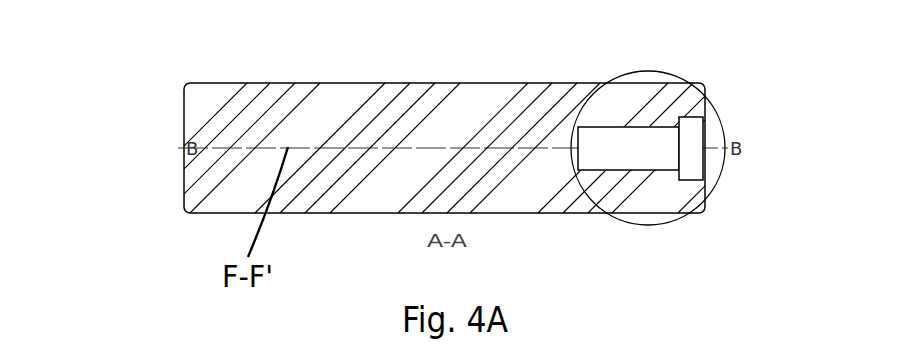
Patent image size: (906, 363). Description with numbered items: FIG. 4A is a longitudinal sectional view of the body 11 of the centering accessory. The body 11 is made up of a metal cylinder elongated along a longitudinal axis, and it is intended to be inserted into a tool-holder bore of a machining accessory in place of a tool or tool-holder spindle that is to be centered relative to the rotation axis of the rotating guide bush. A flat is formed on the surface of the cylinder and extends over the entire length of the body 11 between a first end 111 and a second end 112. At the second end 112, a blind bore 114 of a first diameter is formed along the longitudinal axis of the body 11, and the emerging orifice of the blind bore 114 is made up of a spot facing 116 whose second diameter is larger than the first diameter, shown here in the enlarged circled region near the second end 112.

The body 11 is at (333, 82).
The first end 111 is at (170, 106).
The second end 112 is at (672, 167).
The blind bore 114 is at (628, 150).
The spot facing 116 is at (690, 175).